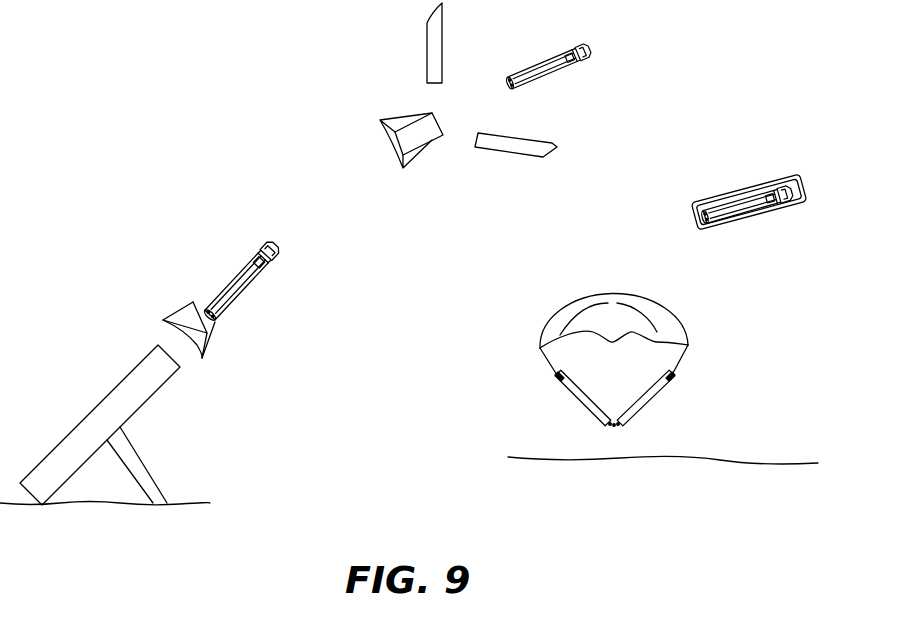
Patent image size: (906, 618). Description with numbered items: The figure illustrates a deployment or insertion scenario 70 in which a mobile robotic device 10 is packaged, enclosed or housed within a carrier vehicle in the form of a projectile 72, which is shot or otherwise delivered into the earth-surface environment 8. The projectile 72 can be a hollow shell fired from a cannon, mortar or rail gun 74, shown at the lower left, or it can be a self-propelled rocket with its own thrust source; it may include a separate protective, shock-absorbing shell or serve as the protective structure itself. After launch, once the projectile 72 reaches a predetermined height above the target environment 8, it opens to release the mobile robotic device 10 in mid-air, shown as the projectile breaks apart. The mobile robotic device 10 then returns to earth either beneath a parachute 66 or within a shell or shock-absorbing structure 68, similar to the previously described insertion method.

The deployment or insertion scenario 70 is at (98, 117).
The projectile 72 is at (234, 268).
The cannon, mortar or rail gun 74 is at (104, 397).
The mobile robotic device 10 is at (247, 297).
The shell or shock-absorbing structure 68 is at (743, 190).
The parachute 66 is at (570, 318).
The earth-surface environment 8 is at (674, 533).